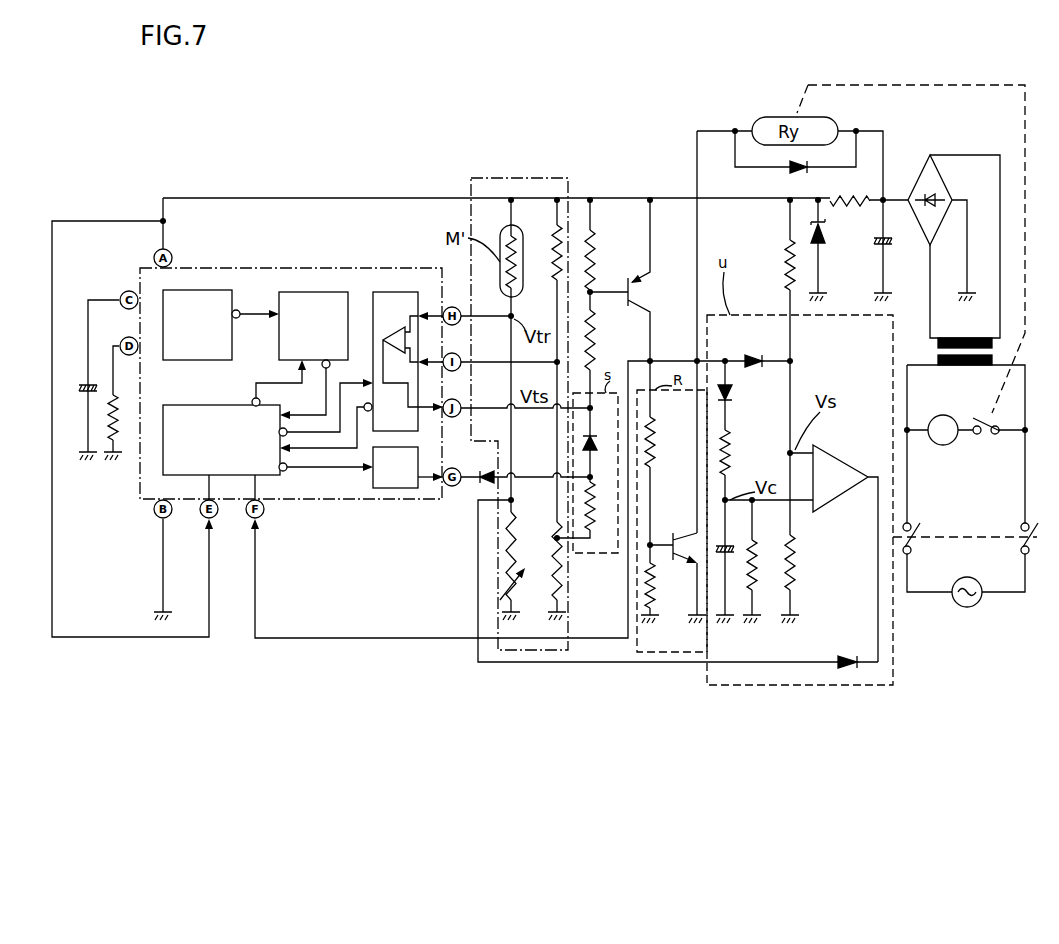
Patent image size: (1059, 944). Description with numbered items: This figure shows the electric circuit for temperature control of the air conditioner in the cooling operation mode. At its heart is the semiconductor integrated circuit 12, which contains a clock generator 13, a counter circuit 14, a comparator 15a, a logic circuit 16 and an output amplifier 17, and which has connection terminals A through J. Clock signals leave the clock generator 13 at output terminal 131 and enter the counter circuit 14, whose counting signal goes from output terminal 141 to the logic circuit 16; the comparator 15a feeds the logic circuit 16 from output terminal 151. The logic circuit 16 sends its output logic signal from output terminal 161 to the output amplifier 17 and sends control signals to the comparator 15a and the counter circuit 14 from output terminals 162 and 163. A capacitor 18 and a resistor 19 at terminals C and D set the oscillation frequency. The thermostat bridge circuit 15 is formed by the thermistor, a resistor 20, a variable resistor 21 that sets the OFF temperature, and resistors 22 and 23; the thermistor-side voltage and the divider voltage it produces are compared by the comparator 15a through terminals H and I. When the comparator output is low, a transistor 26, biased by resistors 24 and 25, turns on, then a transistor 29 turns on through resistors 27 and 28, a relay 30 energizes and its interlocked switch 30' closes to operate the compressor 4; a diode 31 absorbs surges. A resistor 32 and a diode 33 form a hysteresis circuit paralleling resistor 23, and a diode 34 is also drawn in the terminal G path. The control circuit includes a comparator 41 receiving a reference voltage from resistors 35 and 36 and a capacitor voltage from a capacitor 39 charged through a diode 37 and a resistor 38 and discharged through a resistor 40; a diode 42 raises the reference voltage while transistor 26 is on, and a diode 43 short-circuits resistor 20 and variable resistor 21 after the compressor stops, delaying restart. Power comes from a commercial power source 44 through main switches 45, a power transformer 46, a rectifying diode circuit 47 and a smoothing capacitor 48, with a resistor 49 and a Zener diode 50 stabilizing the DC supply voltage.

The compressor 4 is at (943, 447).
The semiconductor integrated circuit 12 is at (313, 268).
The clock generator 13 is at (221, 325).
The output terminal 131 is at (209, 305).
The counter circuit 14 is at (313, 326).
The output terminal 141 is at (309, 376).
The thermostat bridge circuit 15 is at (492, 178).
The comparator 15a is at (408, 361).
The output terminal 151 is at (341, 427).
The logic circuit 16 is at (221, 440).
The output terminal 161 is at (294, 466).
The output terminal 162 is at (295, 410).
The output terminal 163 is at (252, 400).
The output amplifier 17 is at (408, 467).
The capacitor 18 is at (87, 393).
The resistor 19 is at (115, 415).
The resistor 20 is at (505, 528).
The variable resistor 21 is at (520, 565).
The resistor 22 is at (552, 262).
The resistor 23 is at (565, 578).
The resistor 24 is at (597, 336).
The resistor 25 is at (597, 255).
The transistor 26 is at (642, 296).
The resistor 27 is at (656, 432).
The resistor 28 is at (646, 606).
The transistor 29 is at (686, 562).
The relay 30 is at (917, 311).
The interlocked switch 30' is at (980, 405).
The diode 31 is at (785, 172).
The resistor 32 is at (598, 512).
The diode 33 is at (599, 459).
The diode 34 is at (490, 470).
The resistor 35 is at (788, 258).
The resistor 36 is at (800, 547).
The diode 37 is at (733, 394).
The resistor 38 is at (733, 450).
The capacitor 39 is at (722, 556).
The resistor 40 is at (763, 561).
The comparator 41 is at (838, 457).
The diode 42 is at (748, 355).
The diode 43 is at (845, 655).
The commercial power source 44 is at (966, 608).
The main switches 45 is at (1018, 550).
The power transformer 46 is at (950, 338).
The rectifying diode circuit 47 is at (947, 178).
The smoothing capacitor 48 is at (887, 252).
The resistor 49 is at (857, 195).
The Zener diode 50 is at (825, 246).